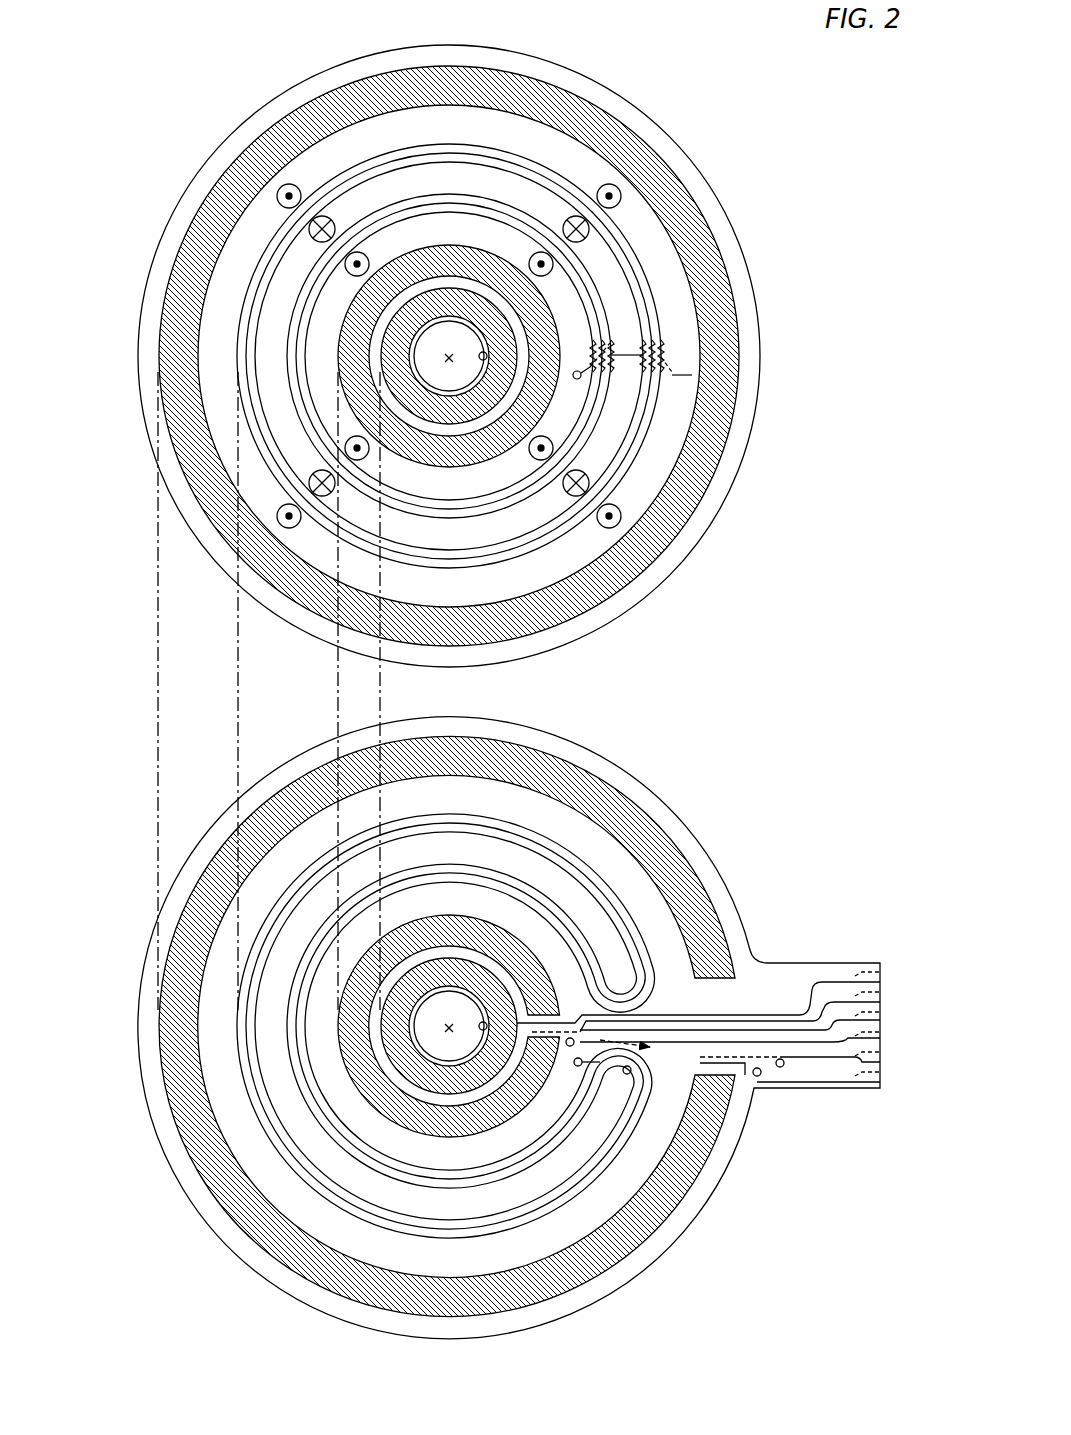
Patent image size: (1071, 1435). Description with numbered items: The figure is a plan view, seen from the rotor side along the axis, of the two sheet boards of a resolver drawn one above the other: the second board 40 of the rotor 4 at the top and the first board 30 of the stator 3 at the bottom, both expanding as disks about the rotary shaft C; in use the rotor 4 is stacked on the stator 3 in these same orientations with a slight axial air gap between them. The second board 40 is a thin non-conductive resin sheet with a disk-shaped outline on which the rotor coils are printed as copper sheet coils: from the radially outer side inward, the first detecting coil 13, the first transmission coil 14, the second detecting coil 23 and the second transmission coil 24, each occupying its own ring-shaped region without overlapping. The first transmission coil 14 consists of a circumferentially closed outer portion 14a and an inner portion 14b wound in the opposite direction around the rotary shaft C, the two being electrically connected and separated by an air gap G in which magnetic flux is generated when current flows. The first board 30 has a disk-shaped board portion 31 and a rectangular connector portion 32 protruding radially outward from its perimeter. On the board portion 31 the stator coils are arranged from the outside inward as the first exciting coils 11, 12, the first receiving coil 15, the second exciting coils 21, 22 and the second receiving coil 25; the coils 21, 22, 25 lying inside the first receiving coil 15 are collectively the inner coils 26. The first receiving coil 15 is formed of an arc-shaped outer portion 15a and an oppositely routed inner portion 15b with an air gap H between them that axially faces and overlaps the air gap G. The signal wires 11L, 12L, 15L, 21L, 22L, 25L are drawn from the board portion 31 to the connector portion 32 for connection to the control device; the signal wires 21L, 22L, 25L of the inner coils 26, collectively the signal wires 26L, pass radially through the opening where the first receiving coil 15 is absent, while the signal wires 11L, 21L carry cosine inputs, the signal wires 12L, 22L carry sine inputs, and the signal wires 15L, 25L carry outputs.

The second board 40 is at (420, 335).
The rotor 4 is at (118, 86).
The first detecting coil 13 is at (181, 218).
The first transmission coil 14 is at (241, 292).
The outer portion 14a is at (627, 238).
The inner portion 14b is at (592, 278).
The air gap G is at (525, 190).
The second detecting coil 23 is at (336, 338).
The second transmission coil 24 is at (374, 366).
The rotary shaft C is at (448, 355).
The first board 30 is at (504, 1022).
The stator 3 is at (118, 773).
The board portion 31 is at (710, 828).
The first exciting coil 11 is at (396, 1027).
The first exciting coil 12 is at (182, 1167).
The first receiving coil 15 is at (242, 1087).
The outer portion 15a is at (623, 1160).
The inner portion 15b is at (585, 1130).
The air gap H is at (546, 1187).
The inner coils 26 is at (60, 986).
The second receiving coil 25 is at (375, 1016).
The second exciting coil 21 is at (309, 1026).
The second exciting coil 22 is at (336, 1041).
The connector portion 32 is at (898, 1026).
The signal wires 26L is at (765, 813).
The signal wire 25L is at (745, 1013).
The signal wire 22L is at (780, 1018).
The signal wire 21L is at (833, 1030).
The signal wire 15L is at (795, 1050).
The signal wire 12L is at (810, 1055).
The signal wire 11L is at (832, 1086).